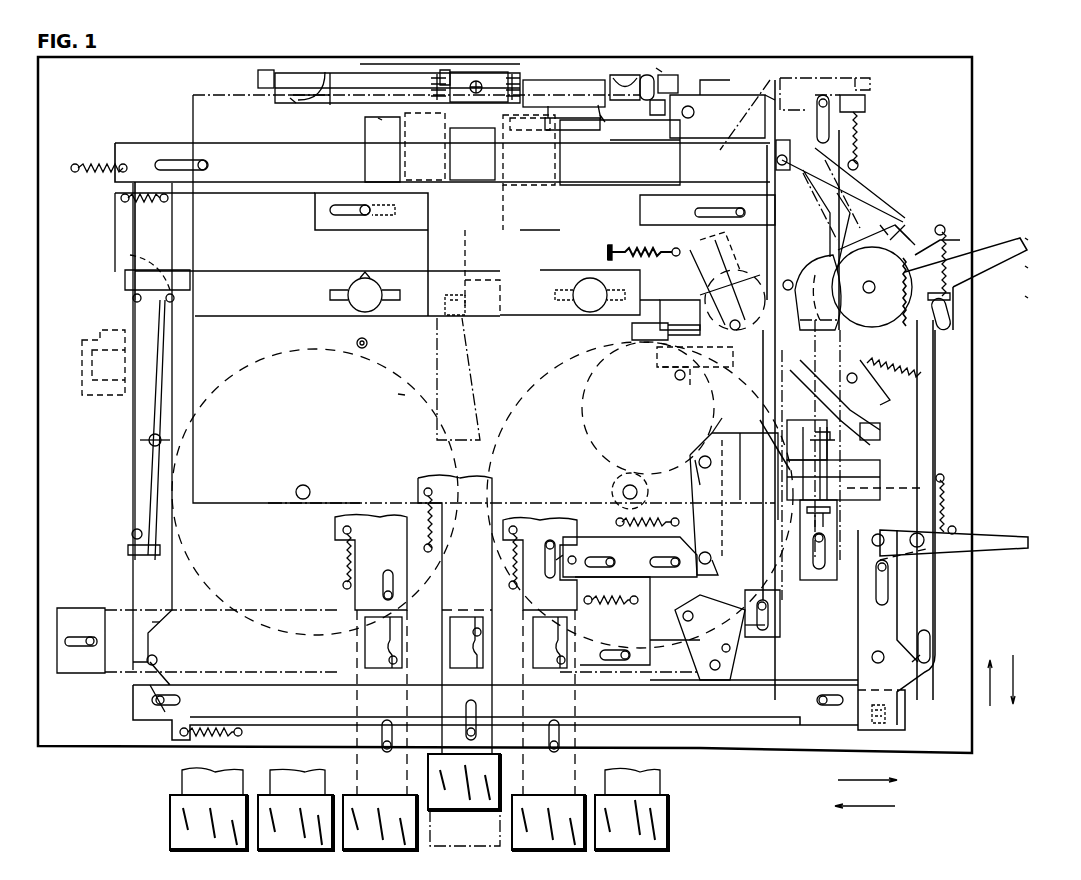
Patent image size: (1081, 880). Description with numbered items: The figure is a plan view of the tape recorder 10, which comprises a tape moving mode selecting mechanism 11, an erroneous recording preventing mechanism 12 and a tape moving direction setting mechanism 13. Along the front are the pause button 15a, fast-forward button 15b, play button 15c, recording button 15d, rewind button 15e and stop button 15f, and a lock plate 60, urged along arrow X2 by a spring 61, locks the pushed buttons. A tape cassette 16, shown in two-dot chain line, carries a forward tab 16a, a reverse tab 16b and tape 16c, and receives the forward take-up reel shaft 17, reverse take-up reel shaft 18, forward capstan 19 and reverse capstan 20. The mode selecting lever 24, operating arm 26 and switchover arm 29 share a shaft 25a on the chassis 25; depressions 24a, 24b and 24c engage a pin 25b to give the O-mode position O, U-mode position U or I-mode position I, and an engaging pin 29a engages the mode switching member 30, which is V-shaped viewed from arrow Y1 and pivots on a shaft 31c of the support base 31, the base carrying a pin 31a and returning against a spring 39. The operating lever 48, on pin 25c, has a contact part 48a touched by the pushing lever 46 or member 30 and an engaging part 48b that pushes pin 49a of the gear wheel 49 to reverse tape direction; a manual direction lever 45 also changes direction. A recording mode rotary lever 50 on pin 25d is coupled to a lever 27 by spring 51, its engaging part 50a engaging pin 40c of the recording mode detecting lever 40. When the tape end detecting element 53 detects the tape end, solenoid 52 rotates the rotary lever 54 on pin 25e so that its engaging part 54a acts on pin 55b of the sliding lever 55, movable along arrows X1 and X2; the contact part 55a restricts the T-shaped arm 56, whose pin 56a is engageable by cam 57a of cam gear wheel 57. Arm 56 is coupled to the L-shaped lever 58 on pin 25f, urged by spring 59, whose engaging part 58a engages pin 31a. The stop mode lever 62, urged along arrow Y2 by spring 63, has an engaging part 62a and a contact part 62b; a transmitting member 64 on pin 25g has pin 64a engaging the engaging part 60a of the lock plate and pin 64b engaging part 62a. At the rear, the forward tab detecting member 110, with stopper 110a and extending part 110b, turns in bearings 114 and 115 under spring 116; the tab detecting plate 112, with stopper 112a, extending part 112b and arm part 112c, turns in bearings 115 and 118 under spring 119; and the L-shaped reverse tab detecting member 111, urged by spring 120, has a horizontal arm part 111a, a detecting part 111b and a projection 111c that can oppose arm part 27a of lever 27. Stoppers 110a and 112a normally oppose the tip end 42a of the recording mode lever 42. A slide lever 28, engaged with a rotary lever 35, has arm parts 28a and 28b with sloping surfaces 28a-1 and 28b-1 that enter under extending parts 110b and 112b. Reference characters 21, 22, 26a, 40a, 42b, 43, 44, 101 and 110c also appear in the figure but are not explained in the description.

The tape recorder 10 is at (186, 48).
The tape moving mode selecting mechanism 11 is at (955, 206).
The erroneous recording preventing mechanism 12 is at (362, 64).
The tape moving direction setting mechanism 13 is at (428, 384).
The pause button 15a is at (668, 814).
The fast-forward button 15b is at (550, 795).
The play button 15c is at (480, 820).
The recording button 15d is at (378, 795).
The rewind button 15e is at (286, 808).
The stop button 15f is at (170, 820).
The tape cassette 16 is at (193, 116).
The forward erroneous erasure preventing tab 16a is at (322, 72).
The reverse erroneous erasure preventing tab 16b is at (622, 74).
The tape 16c is at (290, 496).
The forward take-up reel shaft 17 is at (575, 300).
The reverse take-up reel shaft 18 is at (360, 300).
The forward capstan 19 is at (618, 490).
The reverse capstan 20 is at (303, 500).
The reel table 21 is at (545, 372).
The reel table 22 is at (245, 360).
The mode selecting lever 24 is at (998, 255).
The mode determining depression 24a is at (838, 272).
The mode determining depression 24b is at (830, 310).
The mode determining depression 24c is at (860, 380).
The chassis 25 is at (965, 312).
The shaft 25a is at (876, 296).
The pin 25b is at (786, 280).
The pin 25c is at (700, 388).
The pin 25d is at (160, 440).
The pin 25e is at (125, 530).
The pin 25f is at (697, 112).
The pin 25g is at (680, 626).
The operating arm 26 is at (855, 185).
The pin 26a is at (860, 142).
The lever 27 is at (234, 182).
The arm part 27a is at (598, 105).
The slide lever 28 is at (528, 230).
The arm part 28a is at (365, 124).
The sloping surface 28a-1 is at (380, 120).
The arm part 28b is at (550, 133).
The sloping surface 28b-1 is at (535, 240).
The switchover arm 29 is at (920, 340).
The engaging pin 29a is at (850, 488).
The mode switching member 30 is at (870, 480).
The support base 31 is at (825, 578).
The pin 31a is at (798, 70).
The shaft 31c is at (832, 512).
The rotary lever 35 is at (432, 343).
The spring 39 is at (862, 118).
The recording mode detecting lever 40 is at (762, 714).
The spring 40a is at (350, 722).
The pin 40c is at (156, 658).
The recording mode lever 42 is at (468, 248).
The tip end 42a is at (438, 80).
The slot 42b is at (350, 695).
The slot 43 is at (908, 676).
The lever 44 is at (925, 600).
The manual direction lever 45 is at (1000, 532).
The pushing lever 46 is at (900, 570).
The operating lever 48 is at (915, 398).
The contact part 48a is at (882, 420).
The engaging part 48b is at (660, 352).
The gear wheel 49 is at (580, 420).
The pin 49a is at (662, 375).
The recording mode rotary lever 50 is at (140, 580).
The engaging part 50a is at (155, 645).
The spring 51 is at (130, 198).
The mode switching solenoid 52 is at (80, 355).
The tape end detecting element 53 is at (360, 348).
The rotary lever 54 is at (125, 432).
The engaging part 54a is at (130, 258).
The sliding lever 55 is at (385, 280).
The contact part 55a is at (640, 285).
The pin 55b is at (125, 295).
The T-shaped arm 56 is at (630, 332).
The pin 56a is at (745, 325).
The cam gear wheel 57 is at (705, 270).
The cam 57a is at (745, 272).
The L-shaped lever 58 is at (688, 95).
The engaging part 58a is at (770, 95).
The spring 59 is at (655, 240).
The lock plate 60 is at (594, 680).
The engaging part 60a is at (740, 676).
The spring 61 is at (620, 610).
The stop mode lever 62 is at (776, 624).
The engaging part 62a is at (758, 640).
The contact part 62b is at (715, 420).
The spring 63 is at (700, 485).
The transmitting member 64 is at (685, 608).
The pin 64a is at (700, 682).
The pin 64b is at (765, 640).
The pinch roller 101 is at (612, 472).
The forward tab detecting member 110 is at (345, 72).
The stopper 110a is at (462, 130).
The extending part 110b is at (428, 128).
The plate portion 110c is at (292, 103).
The reverse tab detecting member 111 is at (645, 74).
The horizontal arm part 111a is at (652, 140).
The detecting part 111b is at (660, 68).
The projection 111c is at (600, 140).
The tab detecting plate 112 is at (557, 80).
The stopper 112a is at (500, 183).
The extending part 112b is at (525, 132).
The arm part 112c is at (603, 115).
The bearing 114 is at (265, 70).
The bearing 115 is at (470, 72).
The spring 116 is at (440, 76).
The bearing 118 is at (682, 74).
The spring 119 is at (510, 76).
The spring 120 is at (650, 104).
The O-mode position O is at (1043, 241).
The U-mode position U is at (1042, 269).
The I-mode position I is at (1038, 297).
The arrow X1 is at (854, 779).
The arrow X2 is at (879, 807).
The arrow Y1 is at (993, 695).
The arrow Y2 is at (1015, 666).